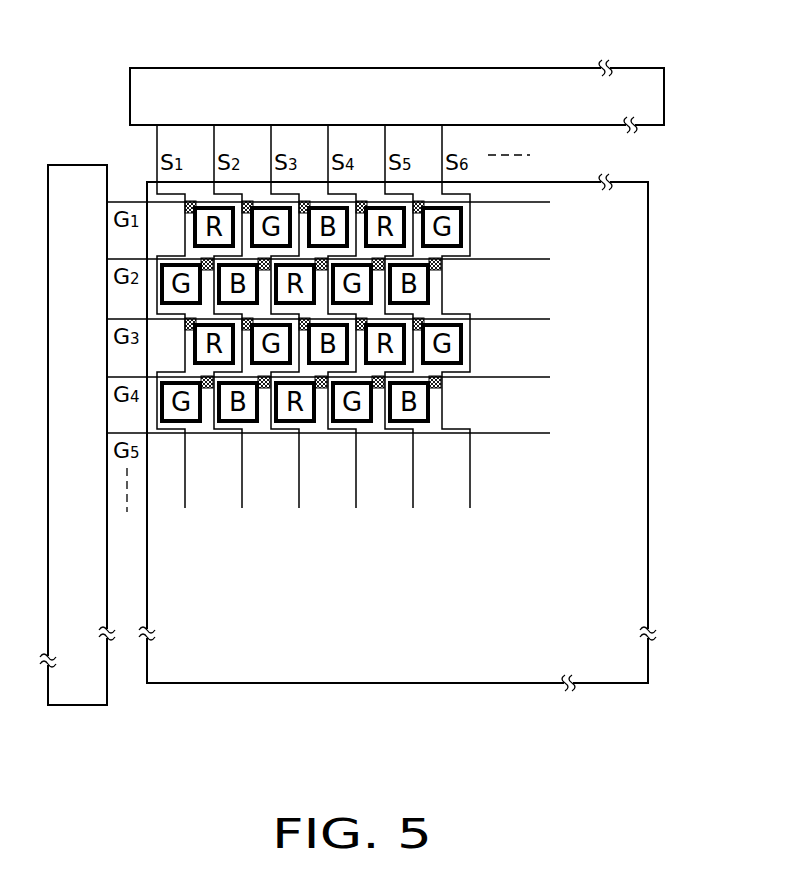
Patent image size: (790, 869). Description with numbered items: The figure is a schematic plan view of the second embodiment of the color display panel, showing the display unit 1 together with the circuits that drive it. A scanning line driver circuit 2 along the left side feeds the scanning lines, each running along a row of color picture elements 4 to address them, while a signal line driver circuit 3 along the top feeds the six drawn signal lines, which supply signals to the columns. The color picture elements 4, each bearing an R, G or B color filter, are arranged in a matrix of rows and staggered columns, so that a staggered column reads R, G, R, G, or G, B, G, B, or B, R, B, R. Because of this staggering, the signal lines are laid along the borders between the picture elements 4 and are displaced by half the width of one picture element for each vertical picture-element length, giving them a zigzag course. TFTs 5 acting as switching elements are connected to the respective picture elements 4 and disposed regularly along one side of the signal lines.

The display unit 1 is at (648, 205).
The scanning line driver circuit 2 is at (77, 165).
The signal line driver circuit 3 is at (214, 68).
The color picture element 4 is at (465, 224).
The TFT 5 is at (442, 380).